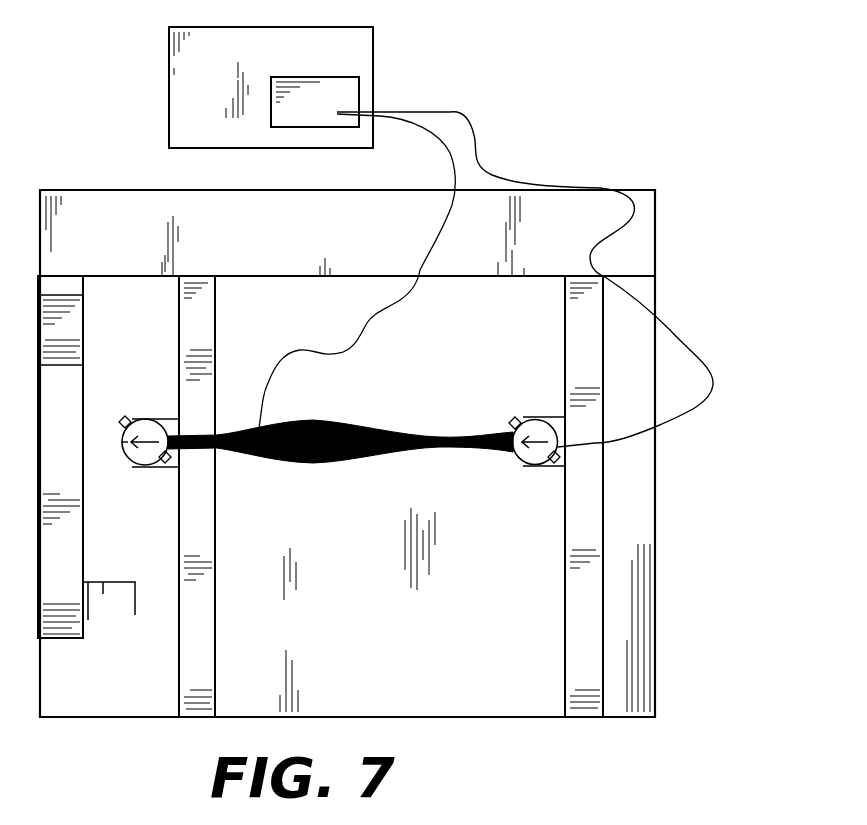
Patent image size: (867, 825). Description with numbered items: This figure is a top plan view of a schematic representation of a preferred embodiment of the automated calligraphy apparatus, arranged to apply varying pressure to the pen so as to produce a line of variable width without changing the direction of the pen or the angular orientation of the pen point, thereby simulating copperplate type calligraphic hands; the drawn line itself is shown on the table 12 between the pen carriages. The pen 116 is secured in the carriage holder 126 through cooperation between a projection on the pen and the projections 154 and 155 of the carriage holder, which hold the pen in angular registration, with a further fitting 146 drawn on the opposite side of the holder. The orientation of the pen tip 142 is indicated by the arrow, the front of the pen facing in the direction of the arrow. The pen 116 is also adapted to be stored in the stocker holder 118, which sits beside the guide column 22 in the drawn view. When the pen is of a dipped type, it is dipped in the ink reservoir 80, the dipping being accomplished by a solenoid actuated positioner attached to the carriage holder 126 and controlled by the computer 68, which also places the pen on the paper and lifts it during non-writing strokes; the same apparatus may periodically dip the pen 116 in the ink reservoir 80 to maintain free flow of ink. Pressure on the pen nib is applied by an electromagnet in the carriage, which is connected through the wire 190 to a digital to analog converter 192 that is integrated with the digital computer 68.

The frame 12 is at (488, 676).
The column 22 is at (204, 642).
The computer 68 is at (188, 78).
The ink reservoir 80 is at (78, 320).
The pen 116 is at (119, 471).
The stocker holder 118 is at (130, 580).
The carriage holder 126 is at (170, 418).
The pen tip 142 is at (122, 442).
The valve 146 is at (124, 416).
The projection 154 is at (173, 458).
The projection 155 is at (162, 465).
The wire 190 is at (368, 324).
The digital to analog converter 192 is at (342, 92).